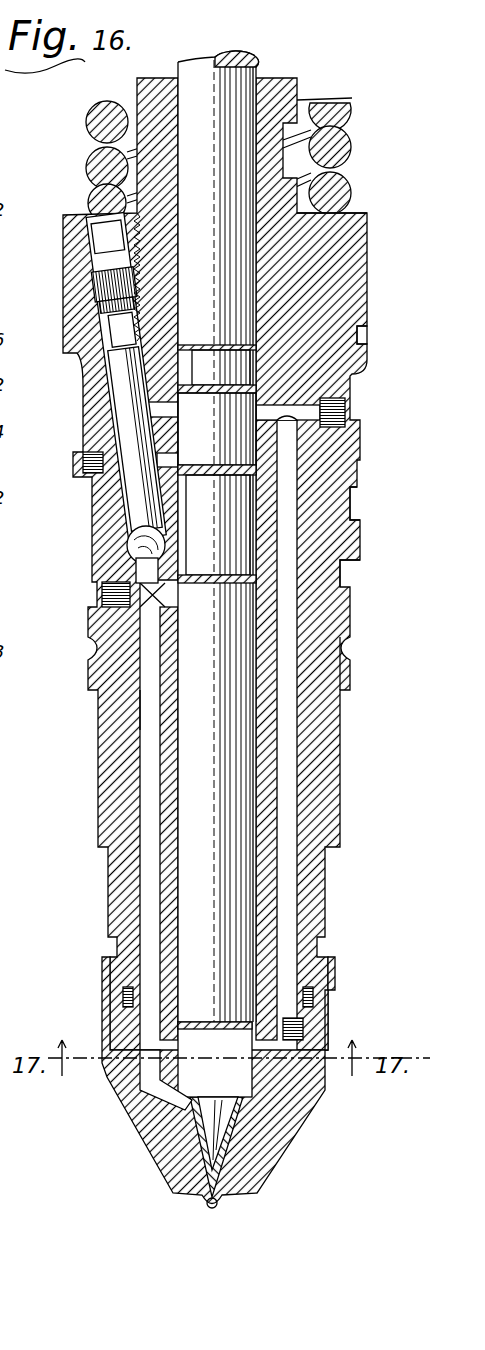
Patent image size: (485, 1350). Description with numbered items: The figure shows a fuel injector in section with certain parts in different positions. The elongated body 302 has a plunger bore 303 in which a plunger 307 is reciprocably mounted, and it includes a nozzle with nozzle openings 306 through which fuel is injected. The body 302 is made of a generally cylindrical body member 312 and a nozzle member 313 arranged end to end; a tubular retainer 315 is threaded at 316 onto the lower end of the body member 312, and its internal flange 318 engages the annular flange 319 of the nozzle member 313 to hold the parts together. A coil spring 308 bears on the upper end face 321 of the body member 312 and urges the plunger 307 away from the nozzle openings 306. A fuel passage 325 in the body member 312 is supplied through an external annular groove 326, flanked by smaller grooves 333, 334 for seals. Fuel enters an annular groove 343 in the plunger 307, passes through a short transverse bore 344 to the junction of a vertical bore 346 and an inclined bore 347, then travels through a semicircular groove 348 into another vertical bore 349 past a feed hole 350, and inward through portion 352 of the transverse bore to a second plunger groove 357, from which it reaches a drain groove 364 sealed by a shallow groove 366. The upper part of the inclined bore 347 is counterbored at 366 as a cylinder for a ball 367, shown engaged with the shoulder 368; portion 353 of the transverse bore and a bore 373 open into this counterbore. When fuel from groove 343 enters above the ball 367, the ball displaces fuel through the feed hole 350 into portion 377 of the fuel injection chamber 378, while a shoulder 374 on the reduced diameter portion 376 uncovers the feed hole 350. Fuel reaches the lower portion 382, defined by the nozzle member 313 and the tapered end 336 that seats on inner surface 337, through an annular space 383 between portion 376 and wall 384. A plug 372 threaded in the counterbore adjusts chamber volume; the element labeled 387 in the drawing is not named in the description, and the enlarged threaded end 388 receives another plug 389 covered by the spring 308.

The elongated body 302 is at (377, 264).
The plunger bore 303 is at (186, 858).
The nozzle openings 306 is at (212, 1204).
The plunger 307 is at (266, 60).
The coil spring 308 is at (90, 163).
The body member 312 is at (110, 760).
The nozzle member 313 is at (162, 1168).
The tubular retainer 315 is at (322, 1030).
The threaded upper end 316 is at (120, 1025).
The internal flange 318 is at (140, 1103).
The annular flange 319 is at (300, 1073).
The upper end face 321 is at (352, 213).
The fuel passage 325 is at (129, 712).
The external annular groove 326 is at (342, 582).
The annular groove 333 is at (343, 660).
The annular groove 334 is at (352, 502).
The tapered lower end 336 is at (248, 1169).
The inner surface 337 is at (200, 1181).
The annular groove 343 is at (246, 505).
The transverse bore 344 is at (168, 600).
The vertical bore 346 is at (140, 808).
The inclined bore 347 is at (176, 577).
The semicircular groove 348 is at (150, 1047).
The vertical bore 349 is at (300, 742).
The feed hole 350 is at (310, 1023).
The transverse bore portion 352 is at (305, 404).
The transverse bore portion 353 is at (172, 408).
The annular groove 357 is at (183, 365).
The groove 364 is at (350, 447).
The counterbore 366 is at (360, 343).
The ball 367 is at (130, 543).
The shoulder 368 is at (136, 560).
The plug 372 is at (90, 383).
The bore 373 is at (175, 463).
The shoulder 374 is at (205, 1022).
The reduced diameter portion 376 is at (228, 1082).
The fuel injection chamber portion 377 is at (112, 1080).
The fuel injection chamber 378 is at (248, 1174).
The lower portion of fuel injection chamber 382 is at (263, 1188).
The annular space 383 is at (308, 1118).
The wall 384 is at (147, 1113).
The valve stem 387 is at (118, 425).
The enlarged threaded end 388 is at (74, 262).
The plug 389 is at (76, 229).